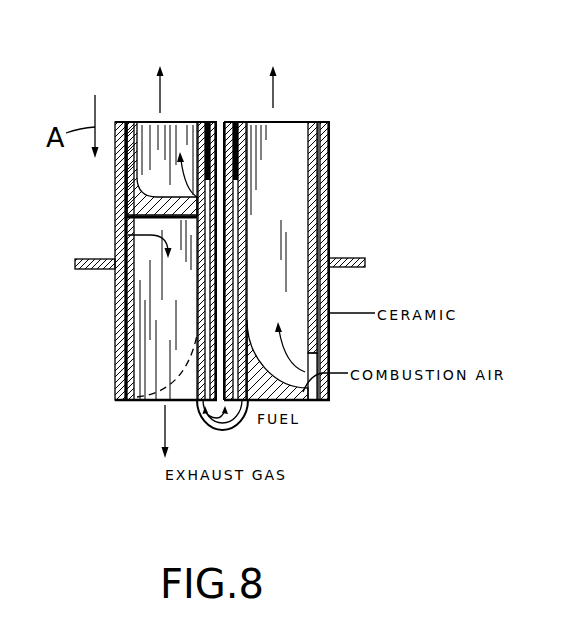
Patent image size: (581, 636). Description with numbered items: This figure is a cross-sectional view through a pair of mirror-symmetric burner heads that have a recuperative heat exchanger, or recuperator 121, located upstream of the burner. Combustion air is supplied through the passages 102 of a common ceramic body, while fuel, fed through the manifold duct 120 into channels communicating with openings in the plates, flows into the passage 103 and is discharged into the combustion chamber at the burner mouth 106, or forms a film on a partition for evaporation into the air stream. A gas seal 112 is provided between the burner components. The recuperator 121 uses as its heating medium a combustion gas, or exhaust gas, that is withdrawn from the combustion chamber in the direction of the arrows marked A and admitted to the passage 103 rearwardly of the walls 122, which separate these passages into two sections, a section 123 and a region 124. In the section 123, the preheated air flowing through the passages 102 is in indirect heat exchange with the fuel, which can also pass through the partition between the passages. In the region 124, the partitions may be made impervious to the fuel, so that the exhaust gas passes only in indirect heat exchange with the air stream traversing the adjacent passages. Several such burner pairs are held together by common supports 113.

The passages 102 is at (272, 137).
The passage 103 is at (163, 147).
The burner mouth 106 is at (135, 126).
The gas seal 112 is at (258, 248).
The common supports 113 is at (340, 258).
The manifold duct 120 is at (217, 418).
The recuperator 121 is at (116, 293).
The walls 122 is at (160, 273).
The section 123 is at (137, 133).
The region 124 is at (175, 385).